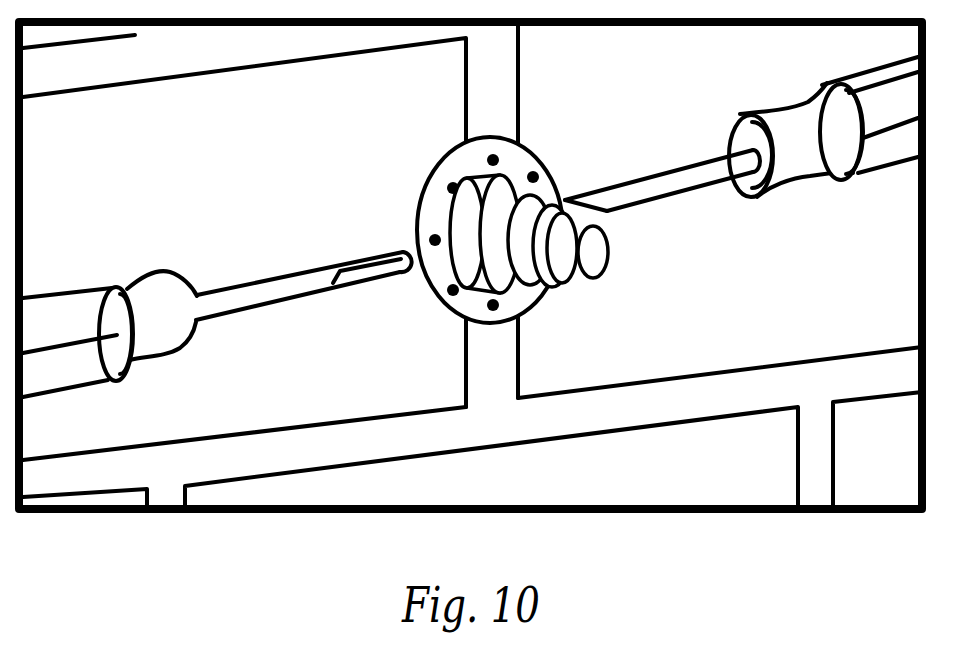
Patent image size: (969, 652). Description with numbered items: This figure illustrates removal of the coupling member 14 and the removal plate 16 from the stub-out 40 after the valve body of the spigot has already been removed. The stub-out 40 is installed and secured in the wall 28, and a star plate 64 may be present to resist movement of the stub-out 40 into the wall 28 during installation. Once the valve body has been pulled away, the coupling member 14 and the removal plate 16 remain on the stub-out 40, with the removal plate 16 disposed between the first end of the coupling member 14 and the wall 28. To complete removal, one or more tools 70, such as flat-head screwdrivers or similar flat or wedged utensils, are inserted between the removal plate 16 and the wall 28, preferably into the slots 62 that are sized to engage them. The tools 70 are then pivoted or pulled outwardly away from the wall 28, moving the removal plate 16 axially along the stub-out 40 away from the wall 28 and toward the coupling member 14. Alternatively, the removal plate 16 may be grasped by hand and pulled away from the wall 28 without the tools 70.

The coupling member 14 is at (563, 293).
The removal plate 16 is at (485, 183).
The wall 28 is at (331, 125).
The stub-out 40 is at (602, 254).
The slots 62 is at (452, 232).
The star plate 64 is at (535, 147).
The tools 70 is at (680, 163).